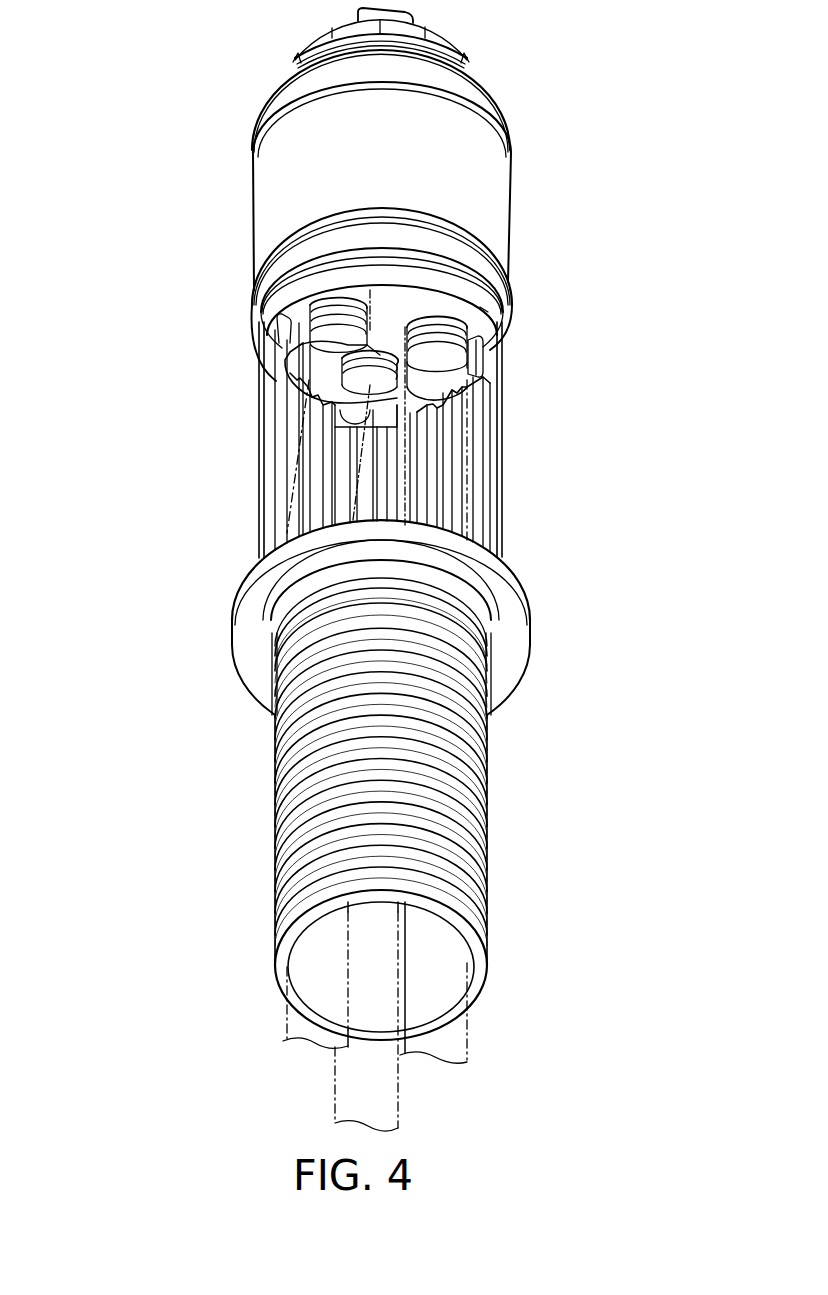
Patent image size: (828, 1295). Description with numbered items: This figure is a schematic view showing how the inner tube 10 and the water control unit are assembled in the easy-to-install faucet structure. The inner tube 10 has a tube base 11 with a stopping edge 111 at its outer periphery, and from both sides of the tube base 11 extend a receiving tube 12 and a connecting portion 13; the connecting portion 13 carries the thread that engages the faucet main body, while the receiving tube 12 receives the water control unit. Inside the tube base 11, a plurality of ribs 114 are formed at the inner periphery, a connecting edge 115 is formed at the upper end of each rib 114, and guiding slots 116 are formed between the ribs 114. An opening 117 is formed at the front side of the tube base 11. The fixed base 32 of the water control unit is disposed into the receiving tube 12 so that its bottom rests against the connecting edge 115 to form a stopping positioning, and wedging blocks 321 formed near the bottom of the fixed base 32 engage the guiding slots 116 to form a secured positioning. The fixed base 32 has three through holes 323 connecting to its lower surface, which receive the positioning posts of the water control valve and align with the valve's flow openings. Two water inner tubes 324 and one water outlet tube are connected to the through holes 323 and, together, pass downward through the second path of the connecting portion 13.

The inner tube 10 is at (262, 208).
The tube base 11 is at (259, 498).
The receiving tube 12 is at (280, 162).
The connecting portion 13 is at (303, 767).
The fixed base 32 is at (405, 296).
The stopping edge 111 is at (256, 574).
The ribs 114 is at (299, 443).
The connecting edge 115 is at (443, 393).
The guiding slots 116 is at (299, 413).
The opening 117 is at (497, 485).
The wedging blocks 321 is at (253, 322).
The through holes 323 is at (480, 307).
The water inner tubes 324 is at (522, 350).